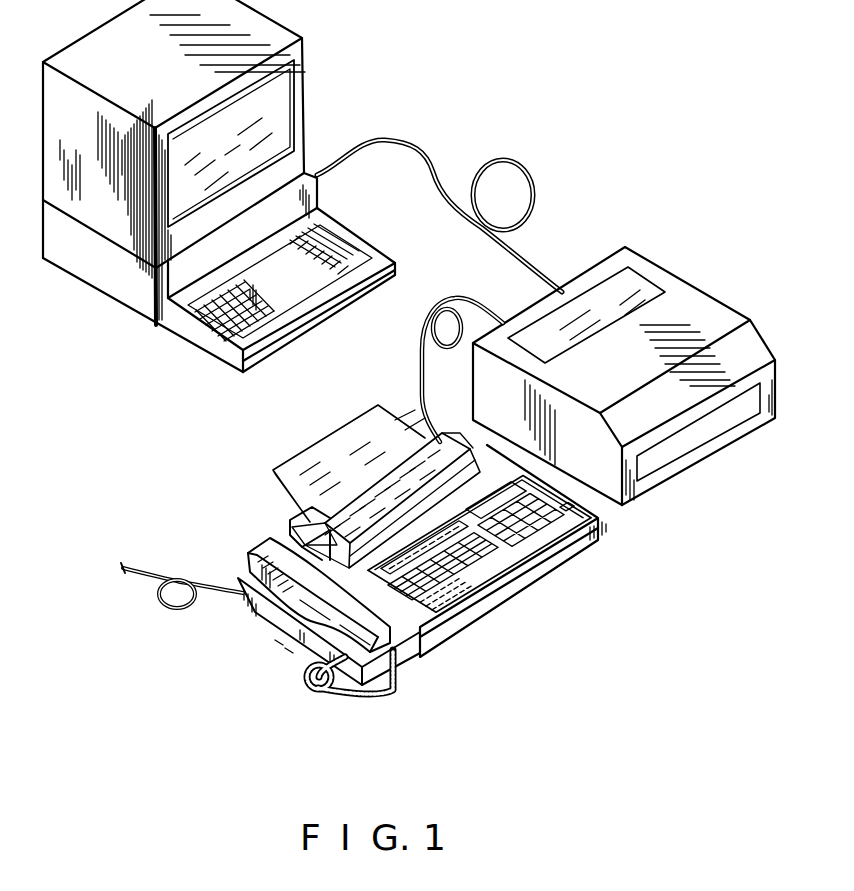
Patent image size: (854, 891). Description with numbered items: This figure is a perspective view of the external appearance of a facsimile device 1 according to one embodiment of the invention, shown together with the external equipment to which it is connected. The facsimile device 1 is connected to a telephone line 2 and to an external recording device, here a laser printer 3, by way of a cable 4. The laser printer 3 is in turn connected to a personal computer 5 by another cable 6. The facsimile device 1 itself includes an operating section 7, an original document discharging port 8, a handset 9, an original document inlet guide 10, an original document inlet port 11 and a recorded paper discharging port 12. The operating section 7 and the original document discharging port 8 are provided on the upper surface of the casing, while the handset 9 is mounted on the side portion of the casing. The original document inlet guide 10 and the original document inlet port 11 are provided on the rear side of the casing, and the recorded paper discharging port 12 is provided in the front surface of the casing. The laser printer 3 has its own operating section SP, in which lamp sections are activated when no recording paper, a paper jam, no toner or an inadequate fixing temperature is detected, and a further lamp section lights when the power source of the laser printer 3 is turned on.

The facsimile device 1 is at (436, 549).
The telephone line 2 is at (172, 604).
The laser printer 3 is at (624, 376).
The cable 4 is at (418, 350).
The personal computer 5 is at (306, 107).
The cable 6 is at (420, 146).
The operating section 7 is at (600, 520).
The original document discharging port 8 is at (487, 477).
The handset 9 is at (291, 600).
The original document inlet guide 10 is at (330, 438).
The original document inlet port 11 is at (383, 473).
The recorded paper discharging port 12 is at (487, 623).
The operating section SP is at (733, 416).